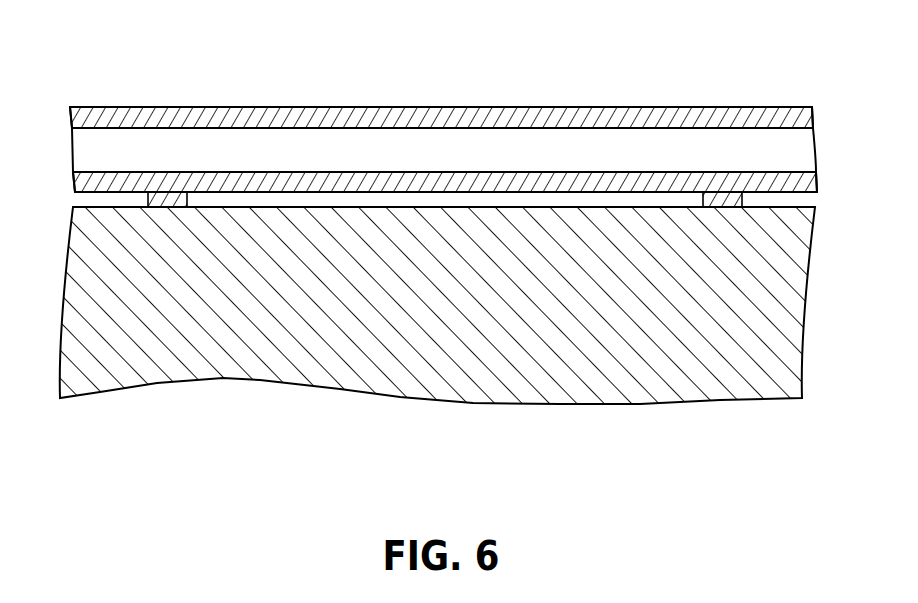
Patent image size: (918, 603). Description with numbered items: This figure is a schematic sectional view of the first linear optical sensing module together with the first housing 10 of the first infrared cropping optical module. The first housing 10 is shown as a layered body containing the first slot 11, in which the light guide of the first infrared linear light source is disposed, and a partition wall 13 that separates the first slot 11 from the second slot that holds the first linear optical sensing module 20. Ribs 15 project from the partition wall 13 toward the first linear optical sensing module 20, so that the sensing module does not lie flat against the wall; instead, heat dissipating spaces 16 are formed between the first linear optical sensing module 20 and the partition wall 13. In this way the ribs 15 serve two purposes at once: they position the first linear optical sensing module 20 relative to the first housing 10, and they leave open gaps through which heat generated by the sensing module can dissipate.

The first housing 10 is at (443, 103).
The first slot 11 is at (203, 143).
The partition wall 13 is at (427, 175).
The ribs 15 is at (723, 200).
The heat dissipating spaces 16 is at (648, 197).
The first linear optical sensing module 20 is at (527, 227).